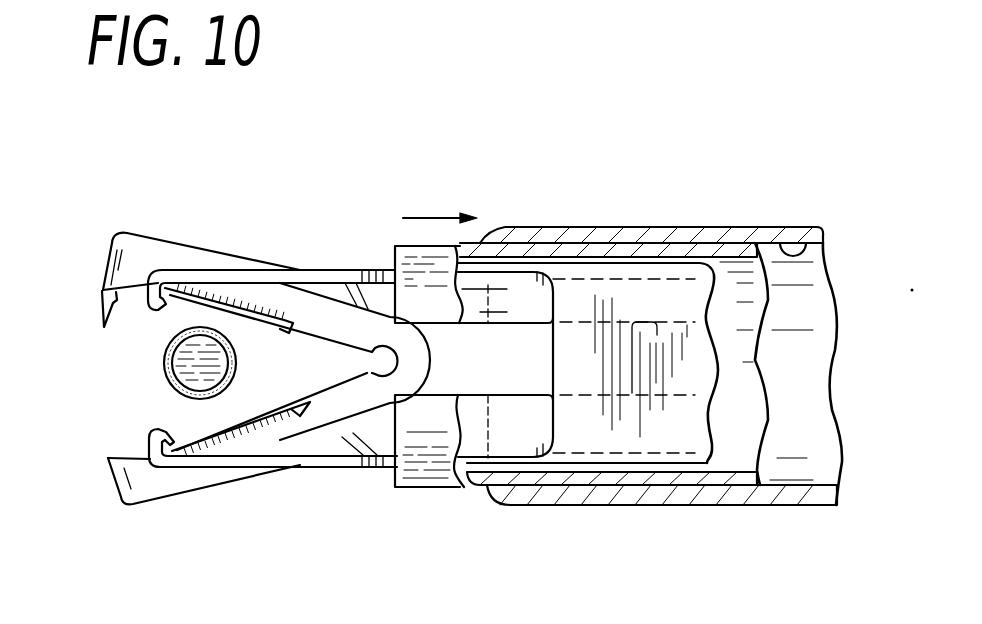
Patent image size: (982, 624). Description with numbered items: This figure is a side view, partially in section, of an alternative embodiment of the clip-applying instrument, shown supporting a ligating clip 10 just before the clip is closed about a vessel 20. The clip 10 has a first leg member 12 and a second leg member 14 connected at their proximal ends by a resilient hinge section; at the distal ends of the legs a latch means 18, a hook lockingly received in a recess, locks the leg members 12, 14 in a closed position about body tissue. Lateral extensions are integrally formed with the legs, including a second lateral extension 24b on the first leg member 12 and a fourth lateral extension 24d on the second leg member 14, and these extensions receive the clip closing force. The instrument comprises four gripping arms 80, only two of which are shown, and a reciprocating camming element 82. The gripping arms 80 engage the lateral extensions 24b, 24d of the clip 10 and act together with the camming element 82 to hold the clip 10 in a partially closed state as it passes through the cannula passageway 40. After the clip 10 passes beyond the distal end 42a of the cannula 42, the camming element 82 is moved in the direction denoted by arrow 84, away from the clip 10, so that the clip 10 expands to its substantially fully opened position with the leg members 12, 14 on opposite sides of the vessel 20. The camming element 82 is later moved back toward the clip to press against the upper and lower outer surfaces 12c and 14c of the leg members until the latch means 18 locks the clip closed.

The ligating clip 10 is at (125, 233).
The first leg member 12 is at (158, 236).
The upper outer surface 12c is at (240, 256).
The second leg member 14 is at (203, 472).
The lower outer surface 14c is at (186, 492).
The latch means 18 is at (100, 312).
The vessel 20 is at (162, 360).
The second lateral extension 24b is at (268, 317).
The fourth lateral extension 24d is at (178, 438).
The cannula passageway 40 is at (808, 240).
The cannula 42 is at (700, 236).
The distal end of the cannula 42a is at (560, 240).
The gripping arm 80 is at (317, 270).
The reciprocating camming element 82 is at (486, 247).
The arrow 84 is at (424, 216).